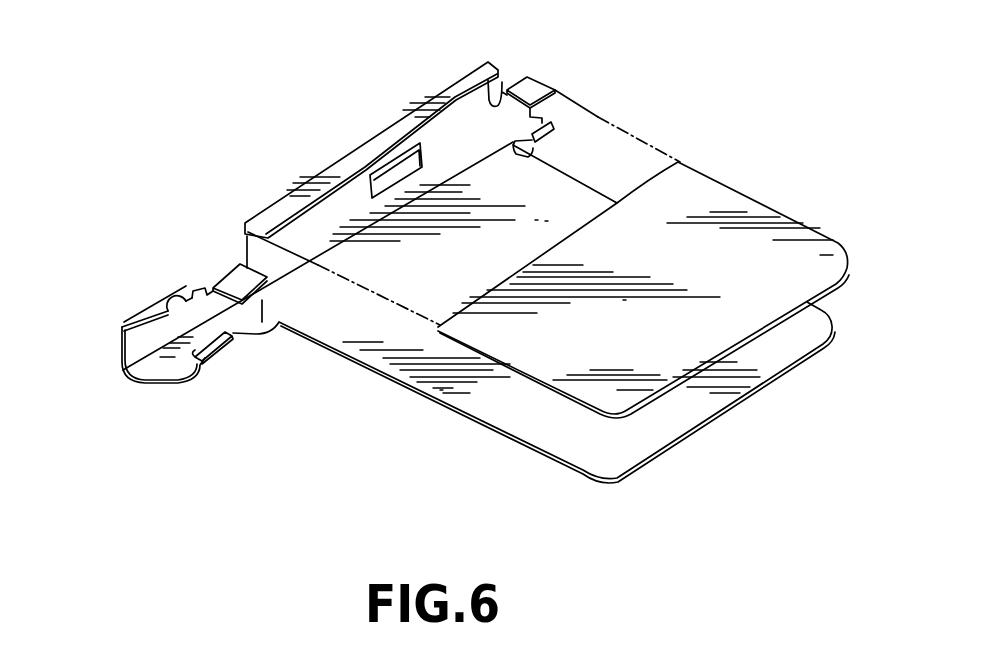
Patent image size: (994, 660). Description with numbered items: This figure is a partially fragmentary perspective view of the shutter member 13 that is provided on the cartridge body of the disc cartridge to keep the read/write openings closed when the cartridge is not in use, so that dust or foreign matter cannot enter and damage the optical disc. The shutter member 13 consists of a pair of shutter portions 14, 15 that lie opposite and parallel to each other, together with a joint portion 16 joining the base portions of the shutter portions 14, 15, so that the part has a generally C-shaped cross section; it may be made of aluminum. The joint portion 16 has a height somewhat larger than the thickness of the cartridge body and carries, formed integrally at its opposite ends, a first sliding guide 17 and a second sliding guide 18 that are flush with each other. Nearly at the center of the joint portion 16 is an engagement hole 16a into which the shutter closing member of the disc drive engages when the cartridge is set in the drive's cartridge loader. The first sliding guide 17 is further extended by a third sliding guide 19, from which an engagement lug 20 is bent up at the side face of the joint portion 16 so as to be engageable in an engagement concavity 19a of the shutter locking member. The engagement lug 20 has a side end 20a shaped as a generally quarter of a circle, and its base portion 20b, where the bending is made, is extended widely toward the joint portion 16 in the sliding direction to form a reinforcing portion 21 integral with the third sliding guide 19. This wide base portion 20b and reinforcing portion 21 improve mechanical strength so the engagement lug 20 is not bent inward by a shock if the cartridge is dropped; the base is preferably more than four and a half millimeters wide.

The shutter member 13 is at (652, 110).
The shutter portion 14 is at (752, 200).
The shutter portion 15 is at (548, 438).
The joint portion 16 is at (262, 240).
The engagement hole 16a is at (412, 152).
The first sliding guide 17 is at (246, 283).
The second sliding guide 18 is at (533, 79).
The third sliding guide 19 is at (148, 347).
The engagement concavity 19a is at (192, 289).
The engagement lug 20 is at (120, 338).
The side end 20a is at (152, 317).
The base portion 20b is at (153, 302).
The reinforcing portion 21 is at (175, 298).